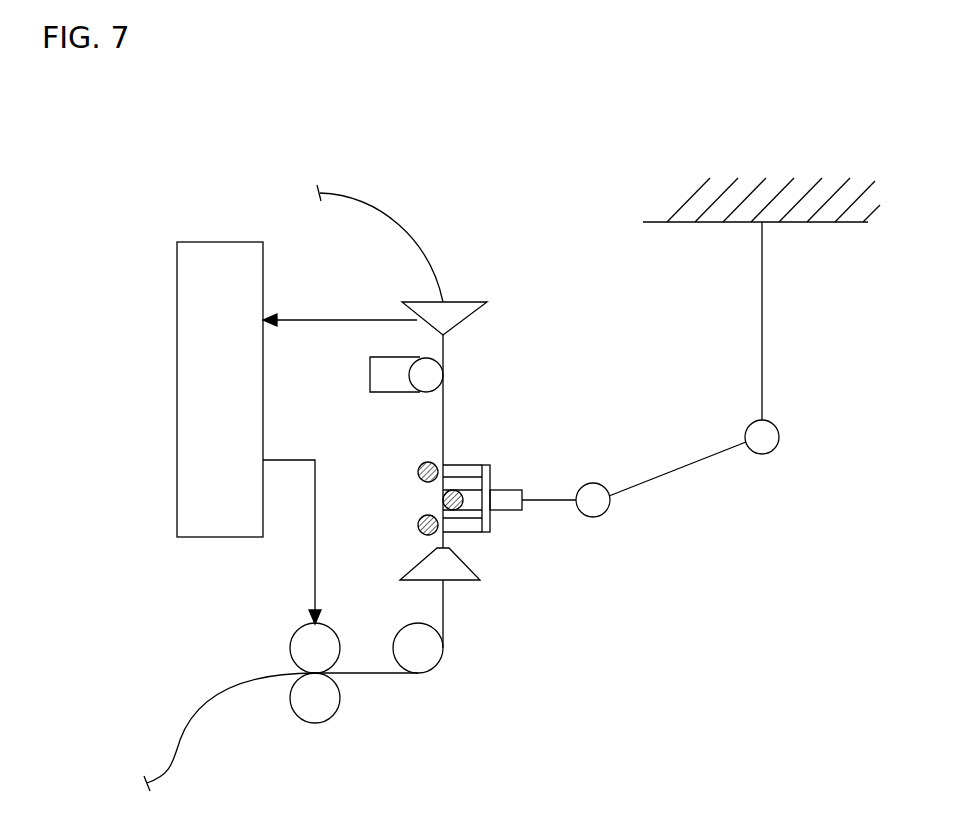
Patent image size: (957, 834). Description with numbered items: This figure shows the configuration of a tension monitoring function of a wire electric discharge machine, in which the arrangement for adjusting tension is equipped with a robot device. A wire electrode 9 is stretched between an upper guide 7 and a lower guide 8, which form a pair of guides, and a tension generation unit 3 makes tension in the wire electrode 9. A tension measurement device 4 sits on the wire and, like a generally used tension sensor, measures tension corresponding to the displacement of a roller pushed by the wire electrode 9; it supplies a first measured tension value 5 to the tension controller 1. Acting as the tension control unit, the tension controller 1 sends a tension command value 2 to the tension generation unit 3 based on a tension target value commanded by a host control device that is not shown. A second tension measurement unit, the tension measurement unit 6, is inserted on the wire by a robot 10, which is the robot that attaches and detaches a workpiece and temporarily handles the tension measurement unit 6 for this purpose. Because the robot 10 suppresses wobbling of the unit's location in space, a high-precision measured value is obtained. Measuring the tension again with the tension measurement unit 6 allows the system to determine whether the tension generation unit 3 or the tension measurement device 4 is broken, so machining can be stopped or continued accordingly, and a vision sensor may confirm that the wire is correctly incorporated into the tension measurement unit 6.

The tension controller 1 is at (203, 242).
The tension command value 2 is at (313, 548).
The tension generation unit 3 is at (315, 723).
The tension measurement device 4 is at (403, 392).
The first measured tension value 5 is at (345, 318).
The tension measurement unit 6 is at (505, 510).
The upper guide 7 is at (475, 300).
The lower guide 8 is at (480, 580).
The wire electrode 9 is at (398, 222).
The robot 10 is at (675, 470).